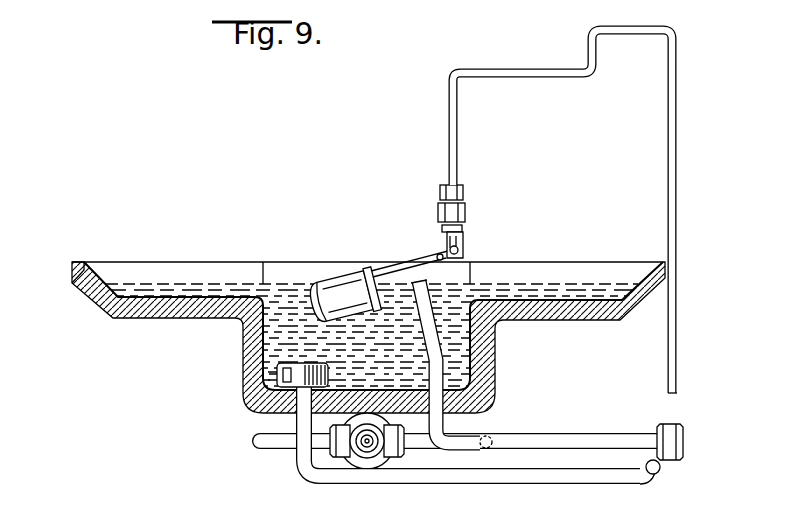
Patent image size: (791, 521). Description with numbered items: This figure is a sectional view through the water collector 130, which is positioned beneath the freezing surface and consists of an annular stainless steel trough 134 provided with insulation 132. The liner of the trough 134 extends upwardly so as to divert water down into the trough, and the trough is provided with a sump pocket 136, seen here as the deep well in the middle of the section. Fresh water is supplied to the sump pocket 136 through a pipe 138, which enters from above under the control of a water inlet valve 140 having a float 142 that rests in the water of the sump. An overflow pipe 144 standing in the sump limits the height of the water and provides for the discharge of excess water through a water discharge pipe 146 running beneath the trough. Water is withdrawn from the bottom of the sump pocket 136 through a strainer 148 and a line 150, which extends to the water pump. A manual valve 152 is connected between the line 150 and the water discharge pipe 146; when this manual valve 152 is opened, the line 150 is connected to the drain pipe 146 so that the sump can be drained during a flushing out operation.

The water collector 130 is at (66, 261).
The insulation 132 is at (100, 298).
The trough 134 is at (86, 264).
The sump pocket 136 is at (247, 381).
The pipe 138 is at (449, 150).
The water inlet valve 140 is at (466, 226).
The float 142 is at (336, 285).
The overflow pipe 144 is at (430, 312).
The water discharge pipe 146 is at (592, 442).
The strainer 148 is at (300, 372).
The line 150 is at (302, 422).
The manual valve 152 is at (368, 457).